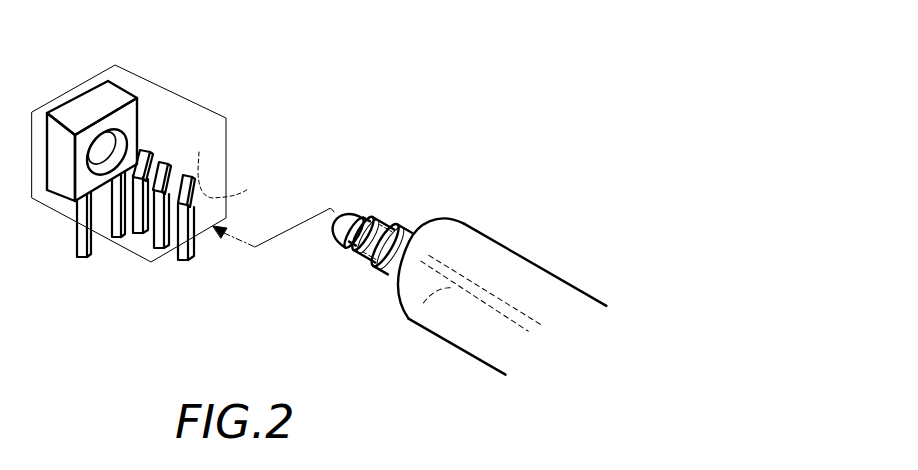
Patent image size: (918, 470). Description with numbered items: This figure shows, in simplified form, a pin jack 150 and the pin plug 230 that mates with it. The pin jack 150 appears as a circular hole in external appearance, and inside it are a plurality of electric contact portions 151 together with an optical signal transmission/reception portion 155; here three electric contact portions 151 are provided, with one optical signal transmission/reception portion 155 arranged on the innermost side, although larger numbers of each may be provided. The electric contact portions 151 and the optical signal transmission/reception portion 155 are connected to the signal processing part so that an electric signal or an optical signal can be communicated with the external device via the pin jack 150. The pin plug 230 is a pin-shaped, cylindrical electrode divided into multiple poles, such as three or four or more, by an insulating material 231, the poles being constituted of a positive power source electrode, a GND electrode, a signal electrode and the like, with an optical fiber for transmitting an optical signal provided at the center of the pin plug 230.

The pin jack 150 is at (248, 189).
The electric contact portions 151 is at (146, 150).
The optical signal transmission/reception portion 155 is at (117, 72).
The pin plug 230 is at (458, 264).
The insulating material 231 is at (391, 220).